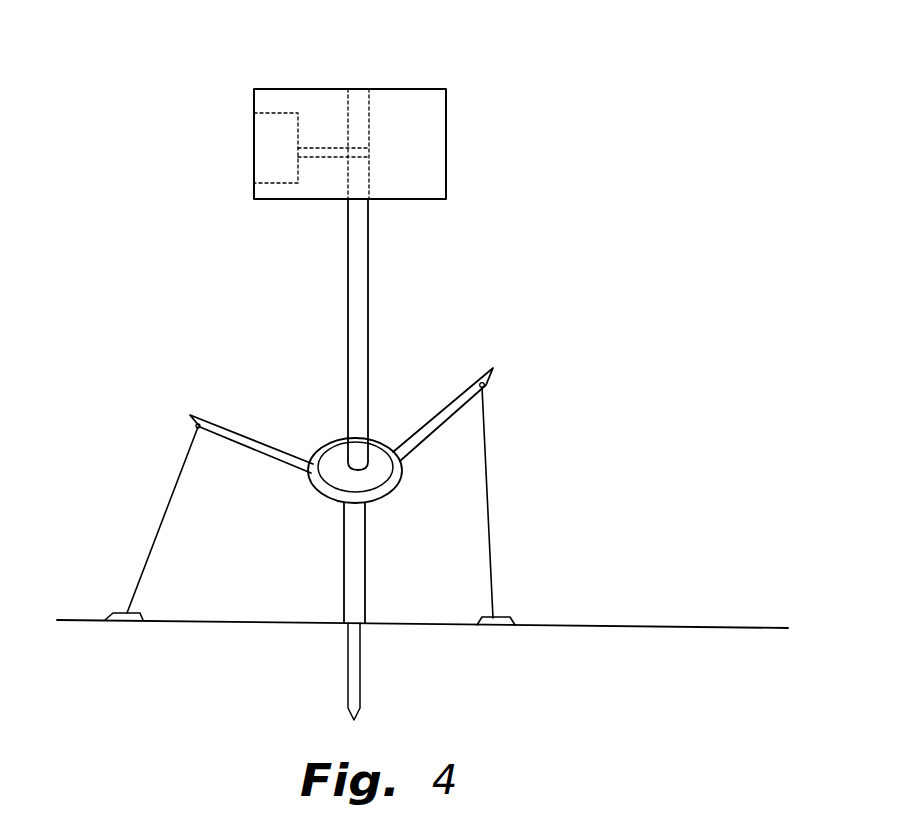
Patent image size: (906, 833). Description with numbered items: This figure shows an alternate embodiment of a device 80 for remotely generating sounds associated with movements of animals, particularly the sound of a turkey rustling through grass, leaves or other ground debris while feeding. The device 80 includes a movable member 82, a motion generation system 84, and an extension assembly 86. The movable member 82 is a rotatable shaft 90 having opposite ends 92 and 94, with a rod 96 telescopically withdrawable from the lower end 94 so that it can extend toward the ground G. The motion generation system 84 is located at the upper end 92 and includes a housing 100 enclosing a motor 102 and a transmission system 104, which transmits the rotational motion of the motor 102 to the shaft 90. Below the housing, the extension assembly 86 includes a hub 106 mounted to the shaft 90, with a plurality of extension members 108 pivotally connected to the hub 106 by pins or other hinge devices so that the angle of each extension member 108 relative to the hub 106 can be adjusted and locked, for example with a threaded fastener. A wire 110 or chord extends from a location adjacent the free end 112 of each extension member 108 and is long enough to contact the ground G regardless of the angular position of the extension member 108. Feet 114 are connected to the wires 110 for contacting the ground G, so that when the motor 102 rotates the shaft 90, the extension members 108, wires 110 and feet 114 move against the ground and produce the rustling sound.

The device 80 is at (572, 90).
The movable member 82 is at (403, 267).
The motion generation system 84 is at (220, 128).
The extension assembly 86 is at (388, 420).
The rotatable shaft 90 is at (358, 327).
The end 92 is at (370, 112).
The end 94 is at (360, 585).
The rod 96 is at (360, 685).
The housing 100 is at (446, 141).
The motor 102 is at (273, 108).
The transmission system 104 is at (325, 140).
The hub 106 is at (330, 462).
The extension member 108 is at (222, 442).
The wire 110 is at (170, 497).
The free end 112 is at (492, 367).
The feet 114 is at (112, 612).
The ground G is at (697, 627).